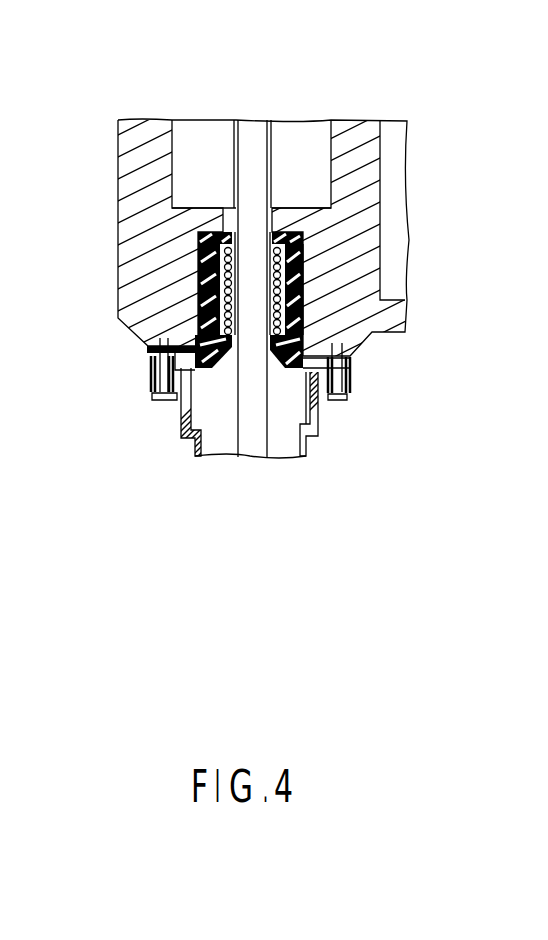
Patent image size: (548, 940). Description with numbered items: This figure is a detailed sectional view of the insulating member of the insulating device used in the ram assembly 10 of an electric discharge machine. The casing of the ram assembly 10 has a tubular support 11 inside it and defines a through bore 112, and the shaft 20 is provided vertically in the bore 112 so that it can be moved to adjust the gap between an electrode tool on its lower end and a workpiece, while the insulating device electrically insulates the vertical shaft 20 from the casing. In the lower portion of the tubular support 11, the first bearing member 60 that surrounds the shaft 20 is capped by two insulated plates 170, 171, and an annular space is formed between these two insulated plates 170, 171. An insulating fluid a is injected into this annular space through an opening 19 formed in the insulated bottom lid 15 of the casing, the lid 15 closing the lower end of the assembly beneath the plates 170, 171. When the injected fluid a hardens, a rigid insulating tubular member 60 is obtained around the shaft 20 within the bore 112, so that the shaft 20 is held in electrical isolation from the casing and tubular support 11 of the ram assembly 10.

The ram assembly 10 is at (118, 170).
The tubular support 11 is at (190, 120).
The shaft 20 is at (255, 120).
The insulated plate 170 is at (198, 242).
The through bore 112 is at (304, 262).
The first bearing member 60 is at (220, 301).
The insulated plate 171 is at (196, 340).
The insulated bottom lid 15 is at (350, 372).
The opening 19 is at (302, 356).
The insulating fluid a is at (320, 420).